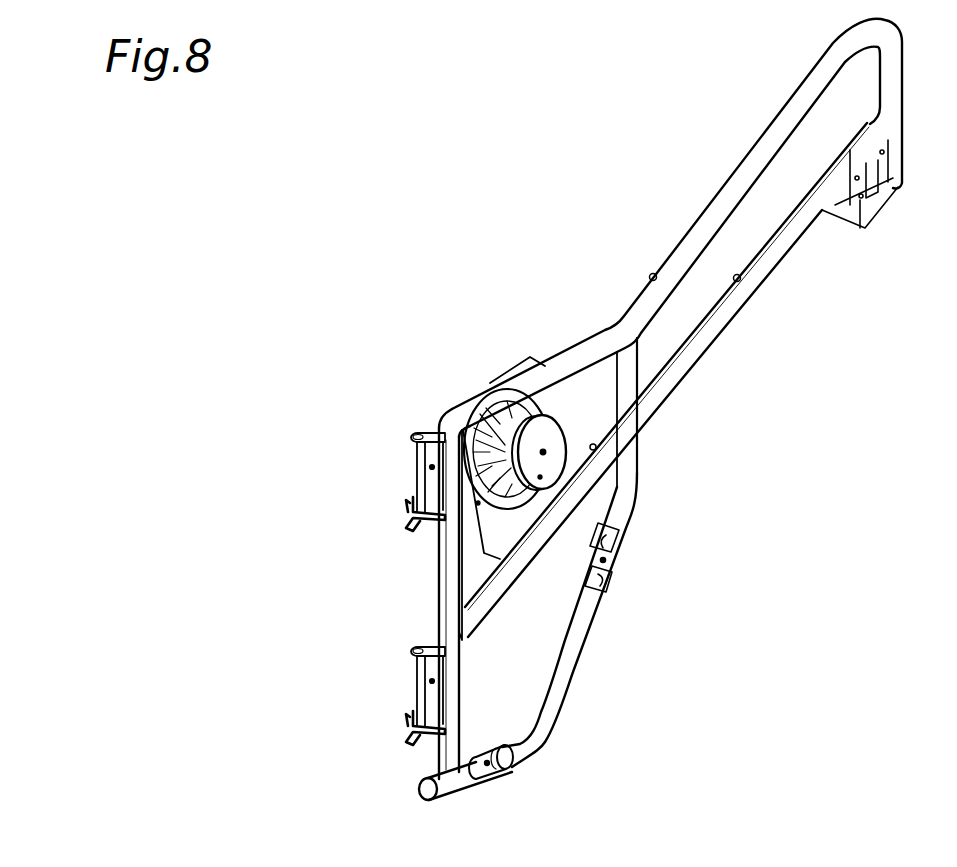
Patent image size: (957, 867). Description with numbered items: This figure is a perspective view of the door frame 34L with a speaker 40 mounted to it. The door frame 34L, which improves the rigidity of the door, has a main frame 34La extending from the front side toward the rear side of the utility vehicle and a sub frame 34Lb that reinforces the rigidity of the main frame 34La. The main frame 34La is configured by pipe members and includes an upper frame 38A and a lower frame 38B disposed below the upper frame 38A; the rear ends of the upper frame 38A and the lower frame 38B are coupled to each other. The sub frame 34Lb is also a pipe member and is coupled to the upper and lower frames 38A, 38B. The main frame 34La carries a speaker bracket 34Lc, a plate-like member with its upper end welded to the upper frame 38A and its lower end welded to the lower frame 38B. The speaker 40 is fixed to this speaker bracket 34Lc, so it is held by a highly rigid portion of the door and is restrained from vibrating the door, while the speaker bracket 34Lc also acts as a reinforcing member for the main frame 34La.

The door frame 34L is at (494, 213).
The main frame 34La is at (750, 101).
The upper frame 38A is at (718, 212).
The lower frame 38B is at (802, 228).
The sub frame 34Lb is at (586, 622).
The speaker bracket 34Lc is at (560, 486).
The speaker 40 is at (551, 441).